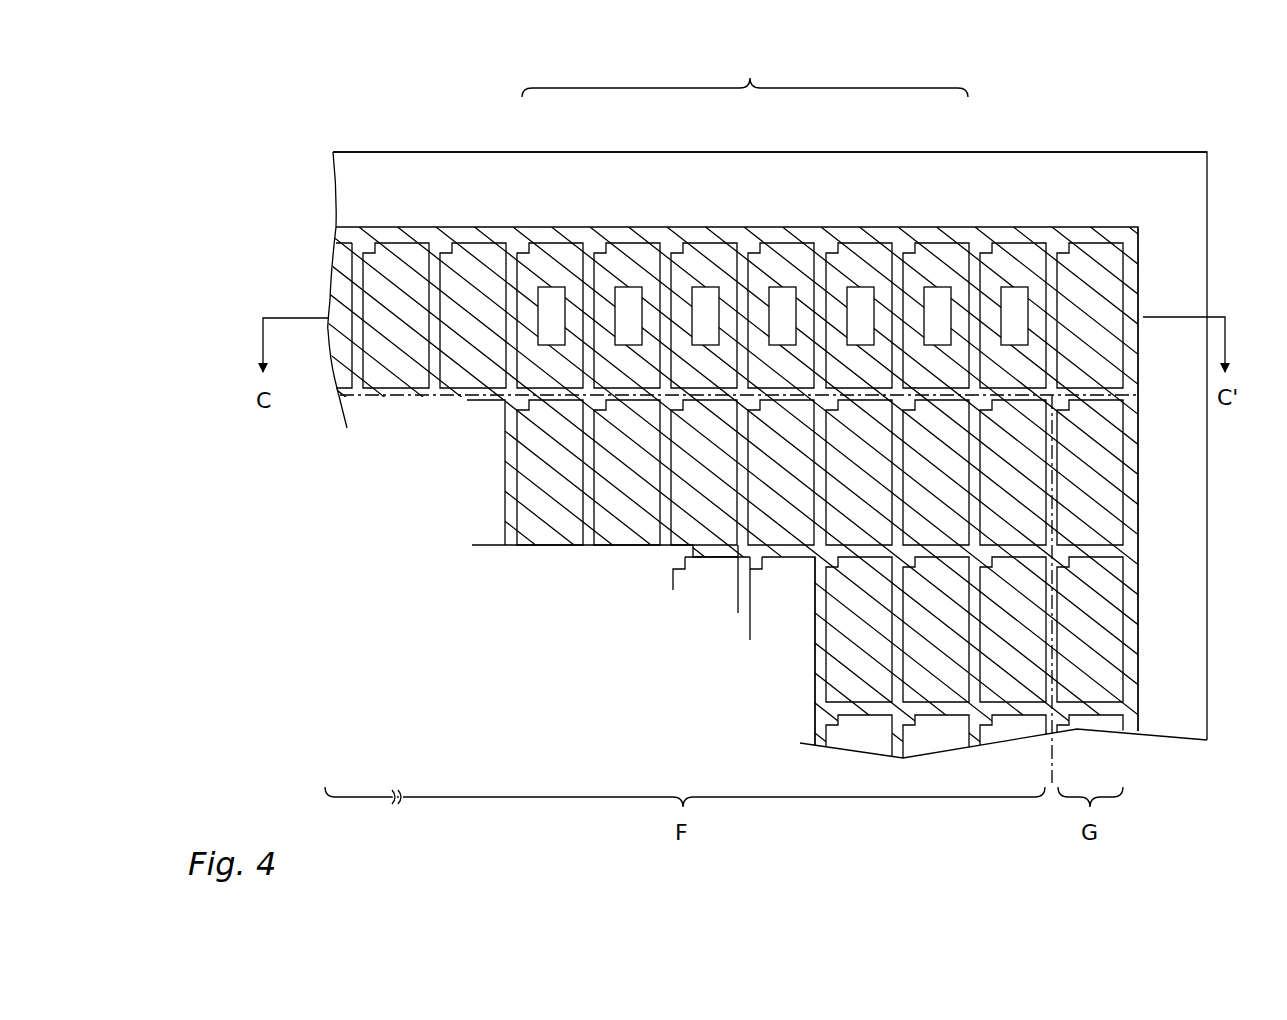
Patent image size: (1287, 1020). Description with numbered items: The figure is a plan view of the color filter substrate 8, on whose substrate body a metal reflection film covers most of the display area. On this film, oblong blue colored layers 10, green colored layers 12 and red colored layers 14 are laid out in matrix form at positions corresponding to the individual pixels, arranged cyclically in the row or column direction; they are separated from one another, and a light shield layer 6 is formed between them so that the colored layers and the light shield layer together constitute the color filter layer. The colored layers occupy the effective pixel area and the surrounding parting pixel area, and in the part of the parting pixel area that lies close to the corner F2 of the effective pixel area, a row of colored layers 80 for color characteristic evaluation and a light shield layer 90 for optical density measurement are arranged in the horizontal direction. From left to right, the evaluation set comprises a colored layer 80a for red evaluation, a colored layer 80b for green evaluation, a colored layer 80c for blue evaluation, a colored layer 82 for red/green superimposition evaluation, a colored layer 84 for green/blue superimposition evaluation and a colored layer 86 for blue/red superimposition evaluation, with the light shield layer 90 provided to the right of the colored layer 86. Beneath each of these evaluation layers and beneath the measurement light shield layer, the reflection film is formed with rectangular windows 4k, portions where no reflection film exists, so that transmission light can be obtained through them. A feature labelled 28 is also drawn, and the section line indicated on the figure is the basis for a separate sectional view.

The color filter substrate 8 is at (430, 151).
The colored layers for color characteristic evaluation 80 is at (745, 71).
The colored layer for red characteristic evaluation 80a is at (558, 252).
The colored layer for green characteristic evaluation 80b is at (632, 252).
The colored layer for blue characteristic evaluation 80c is at (716, 252).
The colored layer for red/green superimposition color characteristic evaluation 82 is at (787, 252).
The colored layer for green/blue superimposition color characteristic evaluation 84 is at (865, 252).
The colored layer for blue/red superimposition color characteristic evaluation 86 is at (937, 252).
The light shield layer for optical density measurement 90 is at (1015, 240).
The rectangular windows 4k is at (1020, 318).
The light shield layer 6 is at (1130, 290).
The red colored layer 14 is at (548, 532).
The green colored layer 12 is at (612, 532).
The blue colored layer 10 is at (683, 527).
The light shielding region edge 28 is at (805, 688).
The corner of the effective pixel area F2 is at (1088, 420).